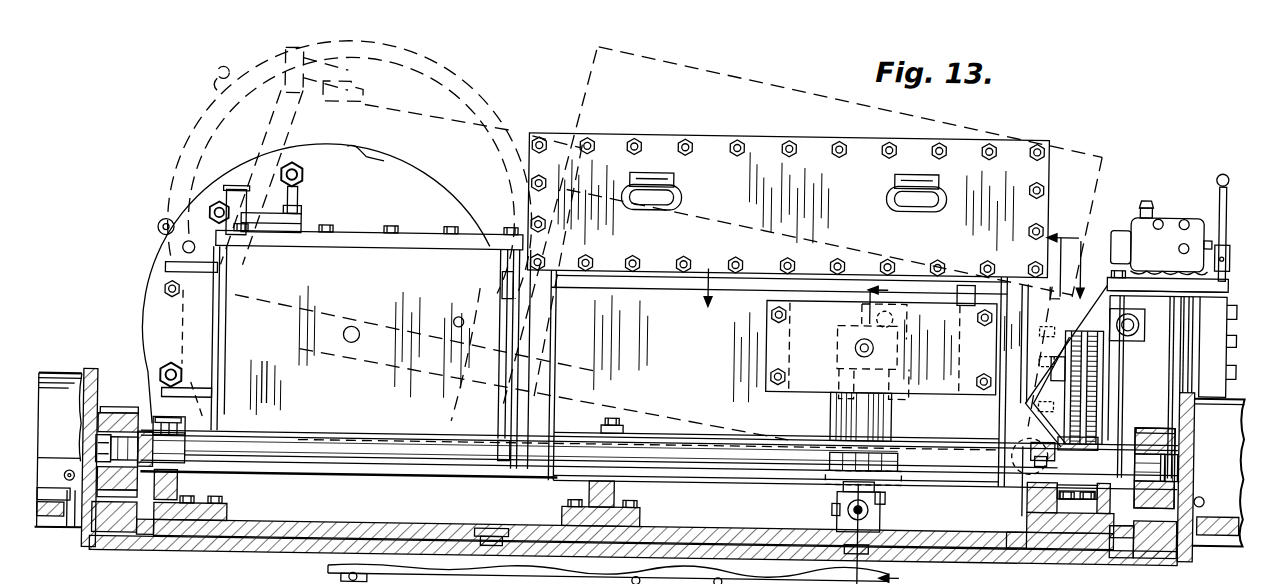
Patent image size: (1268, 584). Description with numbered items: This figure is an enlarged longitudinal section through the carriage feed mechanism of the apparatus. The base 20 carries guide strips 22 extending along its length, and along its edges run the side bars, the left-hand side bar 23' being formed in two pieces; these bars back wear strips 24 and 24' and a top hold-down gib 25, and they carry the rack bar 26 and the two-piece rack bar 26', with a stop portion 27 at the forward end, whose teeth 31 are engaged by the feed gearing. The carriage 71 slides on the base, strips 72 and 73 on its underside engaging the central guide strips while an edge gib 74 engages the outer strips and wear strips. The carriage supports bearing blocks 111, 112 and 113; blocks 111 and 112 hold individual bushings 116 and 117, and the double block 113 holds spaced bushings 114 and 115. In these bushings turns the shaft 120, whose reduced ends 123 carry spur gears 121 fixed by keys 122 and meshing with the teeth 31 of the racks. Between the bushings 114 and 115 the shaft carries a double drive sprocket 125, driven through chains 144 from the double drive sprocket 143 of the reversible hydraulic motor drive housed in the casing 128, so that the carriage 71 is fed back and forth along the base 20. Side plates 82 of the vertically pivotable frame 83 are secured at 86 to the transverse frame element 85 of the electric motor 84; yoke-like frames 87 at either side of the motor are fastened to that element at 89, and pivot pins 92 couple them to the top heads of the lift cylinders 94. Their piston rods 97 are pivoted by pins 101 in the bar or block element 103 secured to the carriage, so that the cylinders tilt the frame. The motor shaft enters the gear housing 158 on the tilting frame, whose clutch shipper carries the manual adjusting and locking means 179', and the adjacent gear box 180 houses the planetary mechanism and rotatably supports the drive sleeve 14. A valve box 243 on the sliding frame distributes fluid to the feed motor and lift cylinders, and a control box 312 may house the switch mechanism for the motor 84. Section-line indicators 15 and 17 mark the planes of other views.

The drive sleeve 14 is at (1063, 262).
The section line 15 is at (893, 285).
The section line 17 is at (895, 434).
The base portion 20 is at (1003, 556).
The guide strips 22 is at (150, 548).
The side bar 23' is at (69, 466).
The wear strip 24 is at (1145, 552).
The wear strip 24' is at (106, 539).
The top guide strip or hold down gib 25 is at (1115, 520).
The rackway 26 is at (1211, 488).
The rack bar 26' is at (59, 450).
The stop portion 27 is at (1041, 462).
The teeth 31 is at (1207, 493).
The carriage 71 is at (282, 533).
The strip 72 is at (504, 538).
The strip 73 is at (885, 521).
The edge strip or gib 74 is at (143, 547).
The side plates 82 is at (1014, 417).
The vertically pivotable frame 83 is at (1058, 281).
The electric motor 84 is at (722, 405).
The transverse frame element 85 is at (967, 409).
The securing points 86 is at (961, 283).
The yoke-like frame 87 is at (780, 398).
The securing points 89 is at (767, 340).
The pivot pins 92 is at (865, 355).
The tilting jack or lift cylinders 94 is at (833, 406).
The piston rods 97 is at (847, 490).
The pivot pins 101 is at (893, 500).
The transversely extending bar or block element 103 is at (838, 505).
The bearing block 111 is at (159, 466).
The bearing block 112 is at (620, 483).
The double bearing block 113 is at (1040, 503).
The bushing 114 is at (1035, 485).
The bushing 115 is at (1180, 451).
The bearing bushing 116 is at (214, 432).
The bearing bushing 117 is at (623, 429).
The shaft 120 is at (450, 430).
The spur gears 121 is at (141, 431).
The keys 122 is at (88, 455).
The reduced ends 123 is at (85, 426).
The double drive sprocket 125 is at (1080, 480).
The casing 128 is at (1227, 287).
The double drive sprocket 143 is at (1098, 351).
The chains 144 is at (1094, 383).
The gear housing 158 is at (357, 258).
The manually operable adjusting and locking means 179' is at (243, 198).
The gear box 180 is at (420, 185).
The valve box 243 is at (1147, 242).
The control box 312 is at (755, 137).